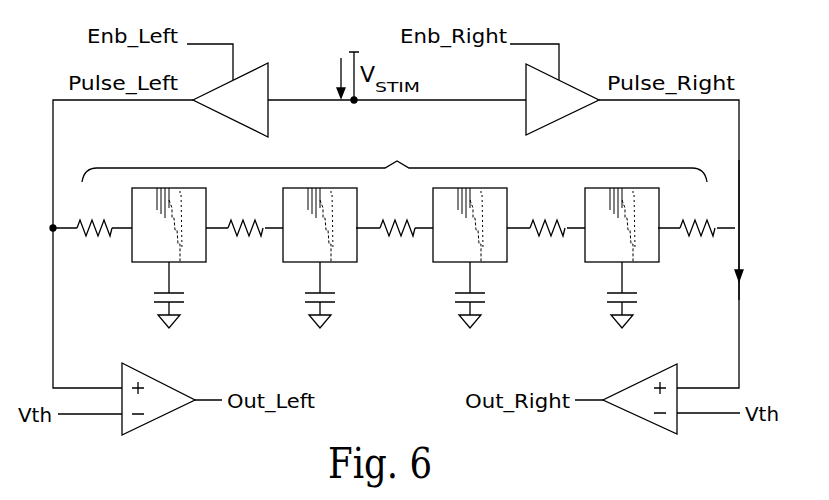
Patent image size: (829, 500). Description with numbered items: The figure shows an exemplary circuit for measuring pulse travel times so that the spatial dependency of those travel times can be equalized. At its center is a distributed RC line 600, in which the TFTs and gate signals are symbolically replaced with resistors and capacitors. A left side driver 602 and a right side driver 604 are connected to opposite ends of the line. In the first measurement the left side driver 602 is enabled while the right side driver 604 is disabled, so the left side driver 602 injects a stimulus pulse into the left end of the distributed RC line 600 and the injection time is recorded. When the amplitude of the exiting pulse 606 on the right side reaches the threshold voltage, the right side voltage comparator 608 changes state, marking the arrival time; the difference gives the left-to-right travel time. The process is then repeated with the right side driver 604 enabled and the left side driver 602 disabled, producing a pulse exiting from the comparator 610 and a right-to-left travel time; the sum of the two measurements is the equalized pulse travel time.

The distributed RC line 600 is at (392, 230).
The left side driver 602 is at (230, 100).
The right side driver 604 is at (562, 99).
The exiting pulse 606 is at (758, 230).
The right side voltage comparator 608 is at (627, 415).
The comparator 610 is at (165, 415).